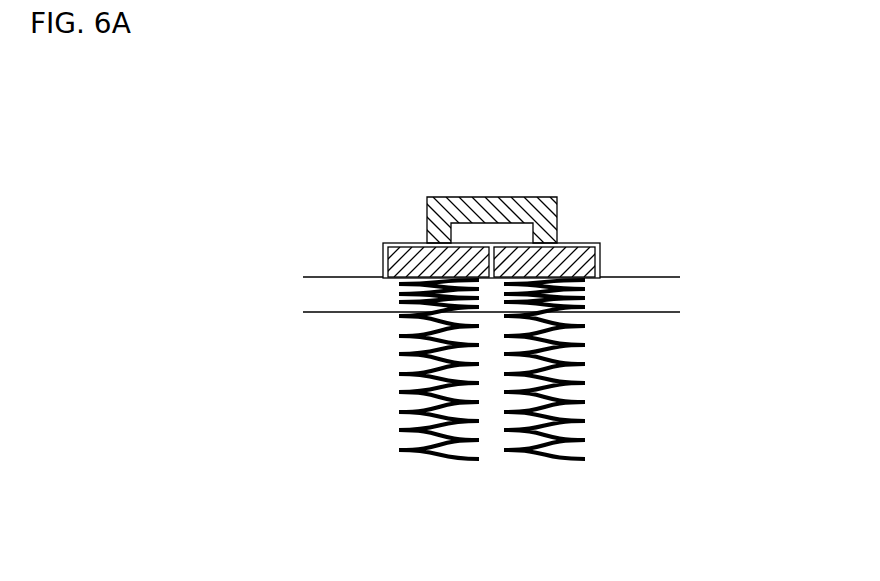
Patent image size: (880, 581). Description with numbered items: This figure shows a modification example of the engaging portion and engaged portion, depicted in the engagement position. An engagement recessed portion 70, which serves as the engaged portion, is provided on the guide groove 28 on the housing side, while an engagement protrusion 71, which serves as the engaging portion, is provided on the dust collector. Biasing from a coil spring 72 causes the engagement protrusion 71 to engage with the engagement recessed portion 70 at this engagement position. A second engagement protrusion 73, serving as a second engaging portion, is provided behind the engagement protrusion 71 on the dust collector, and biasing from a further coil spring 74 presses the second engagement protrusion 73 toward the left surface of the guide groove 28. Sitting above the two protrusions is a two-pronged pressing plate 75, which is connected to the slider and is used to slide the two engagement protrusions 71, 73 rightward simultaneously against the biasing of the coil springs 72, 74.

The guide groove 28 is at (657, 298).
The engagement recessed portion 70 is at (600, 244).
The engagement protrusion 71 is at (405, 253).
The coil spring 72 is at (452, 450).
The second engagement protrusion 73 is at (570, 255).
The coil spring 74 is at (553, 450).
The two-pronged pressing plate 75 is at (500, 205).